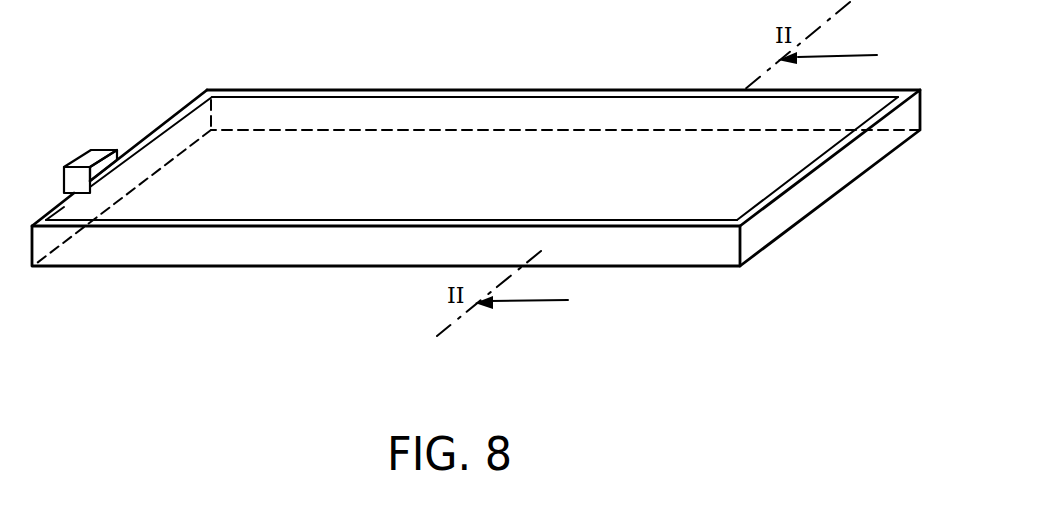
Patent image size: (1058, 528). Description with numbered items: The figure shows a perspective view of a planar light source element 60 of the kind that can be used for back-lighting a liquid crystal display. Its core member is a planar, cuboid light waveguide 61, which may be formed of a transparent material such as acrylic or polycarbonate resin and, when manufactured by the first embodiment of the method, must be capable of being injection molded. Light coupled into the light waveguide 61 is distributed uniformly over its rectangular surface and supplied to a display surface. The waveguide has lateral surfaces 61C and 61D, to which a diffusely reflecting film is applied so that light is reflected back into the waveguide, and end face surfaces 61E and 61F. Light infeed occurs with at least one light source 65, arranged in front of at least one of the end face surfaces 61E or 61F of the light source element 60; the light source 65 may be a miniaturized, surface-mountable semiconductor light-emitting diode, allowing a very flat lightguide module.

The light source element 60 is at (653, 45).
The light waveguide 61 is at (573, 181).
The lateral surface 61C is at (463, 90).
The lateral surface 61D is at (325, 252).
The end face surface 61E is at (808, 202).
The end face surface 61F is at (160, 127).
The light source 65 is at (100, 150).